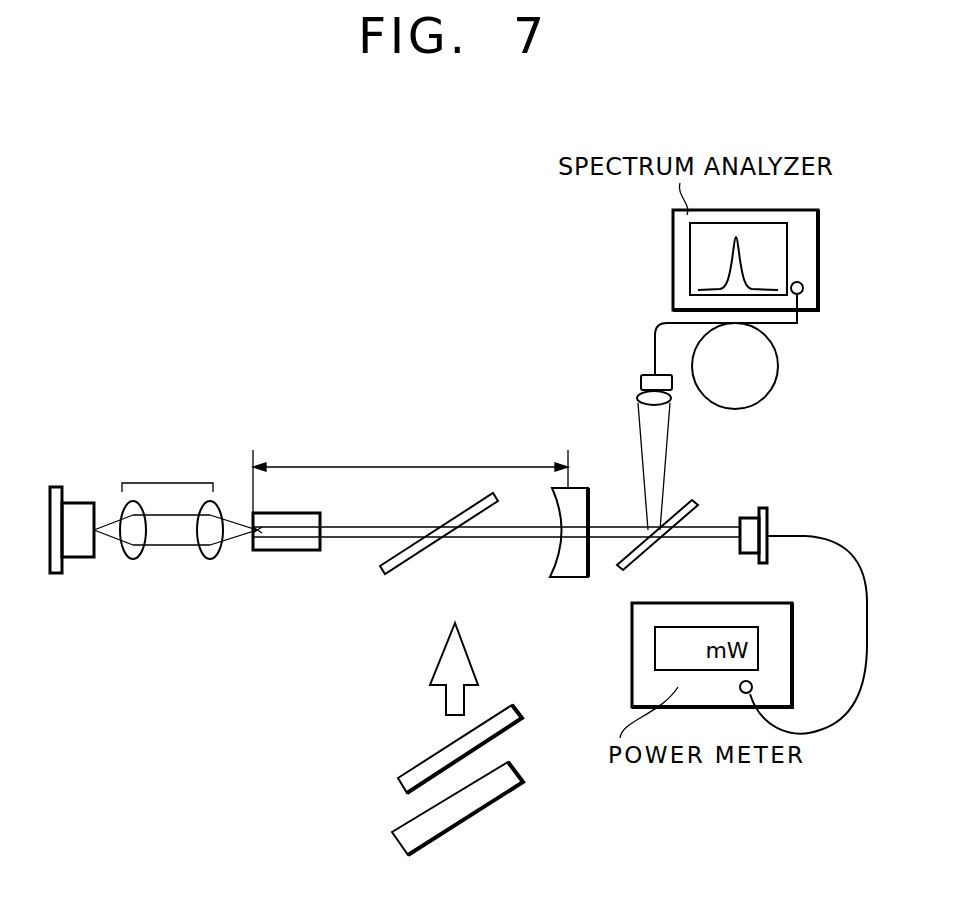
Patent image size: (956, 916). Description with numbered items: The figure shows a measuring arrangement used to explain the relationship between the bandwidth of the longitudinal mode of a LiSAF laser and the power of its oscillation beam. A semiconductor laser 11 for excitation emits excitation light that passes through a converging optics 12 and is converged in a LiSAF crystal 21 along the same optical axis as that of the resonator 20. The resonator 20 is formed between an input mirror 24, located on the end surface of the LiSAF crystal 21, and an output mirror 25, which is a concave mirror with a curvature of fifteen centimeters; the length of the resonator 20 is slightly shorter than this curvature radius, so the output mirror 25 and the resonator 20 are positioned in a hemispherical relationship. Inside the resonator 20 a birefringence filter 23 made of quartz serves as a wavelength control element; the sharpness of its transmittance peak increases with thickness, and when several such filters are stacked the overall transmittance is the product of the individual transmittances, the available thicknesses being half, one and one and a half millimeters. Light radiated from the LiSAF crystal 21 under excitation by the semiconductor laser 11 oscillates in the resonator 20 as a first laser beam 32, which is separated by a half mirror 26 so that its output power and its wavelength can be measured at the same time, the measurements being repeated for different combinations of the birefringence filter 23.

The semiconductor laser 11 is at (77, 500).
The converging optics 12 is at (168, 492).
The resonator 20 is at (383, 463).
The LiSAF crystal 21 is at (273, 511).
The birefringence filter 23 is at (447, 526).
The input mirror 24 is at (252, 542).
The output mirror 25 is at (553, 550).
The half mirror 26 is at (683, 505).
The first laser beam 32 is at (353, 538).